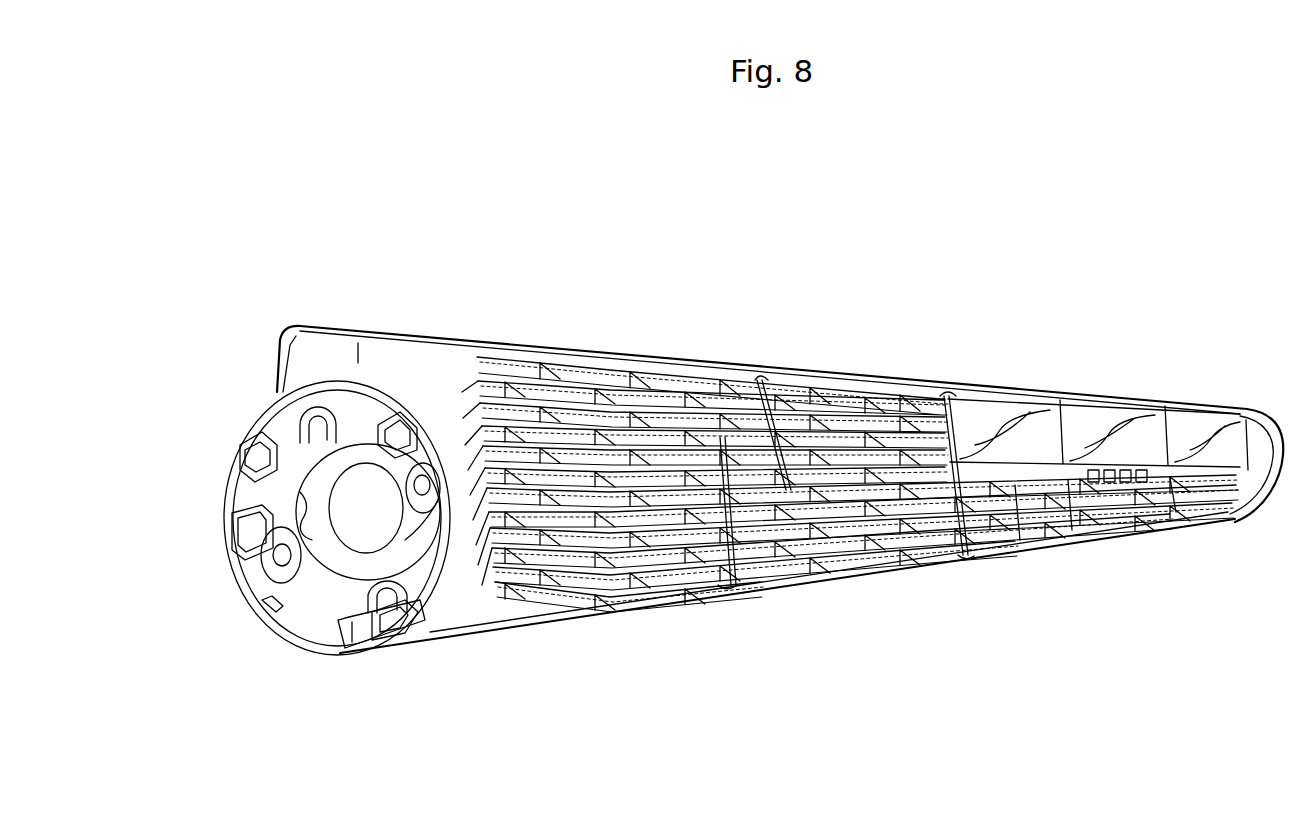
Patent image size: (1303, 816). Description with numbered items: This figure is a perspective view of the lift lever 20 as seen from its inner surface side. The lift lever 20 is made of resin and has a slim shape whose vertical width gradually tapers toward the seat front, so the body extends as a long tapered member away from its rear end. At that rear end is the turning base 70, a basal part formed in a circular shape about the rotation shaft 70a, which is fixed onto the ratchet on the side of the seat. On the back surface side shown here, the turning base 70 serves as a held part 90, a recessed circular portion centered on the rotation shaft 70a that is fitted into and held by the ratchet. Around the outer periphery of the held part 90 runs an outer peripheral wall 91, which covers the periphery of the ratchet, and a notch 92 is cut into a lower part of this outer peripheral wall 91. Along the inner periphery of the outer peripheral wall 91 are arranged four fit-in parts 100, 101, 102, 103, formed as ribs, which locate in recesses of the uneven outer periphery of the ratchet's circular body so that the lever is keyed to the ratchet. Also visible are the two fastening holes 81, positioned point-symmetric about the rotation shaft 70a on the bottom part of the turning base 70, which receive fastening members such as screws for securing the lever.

The lift lever 20 is at (745, 366).
The turning base 70 is at (339, 649).
The rotation shaft 70a is at (303, 533).
The fastening holes 81 is at (285, 575).
The held part 90 is at (367, 380).
The outer peripheral wall 91 is at (432, 545).
The notch 92 is at (273, 604).
The fit-in part 100 is at (356, 492).
The fit-in part 101 is at (427, 623).
The fit-in part 102 is at (240, 557).
The fit-in part 103 is at (262, 432).